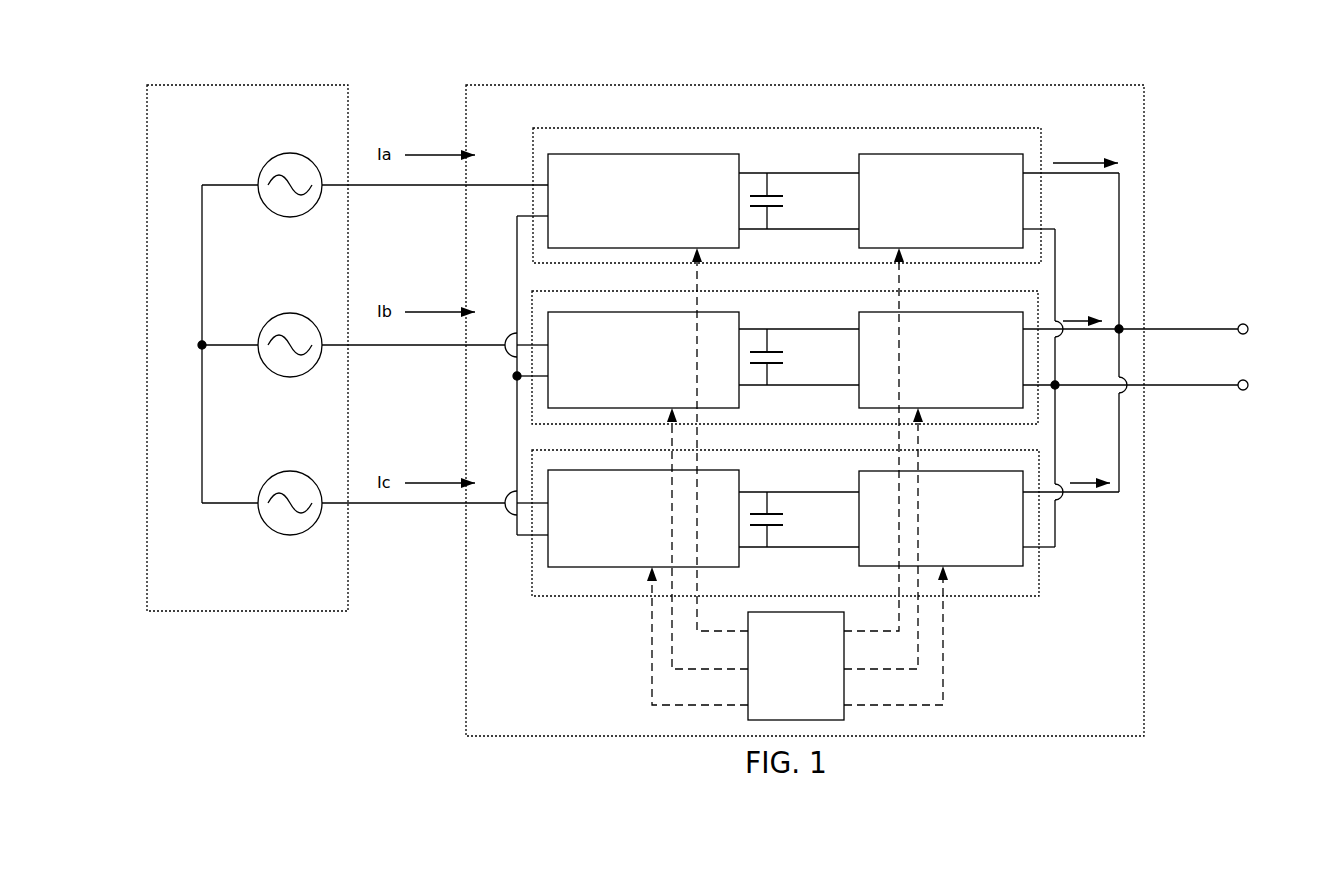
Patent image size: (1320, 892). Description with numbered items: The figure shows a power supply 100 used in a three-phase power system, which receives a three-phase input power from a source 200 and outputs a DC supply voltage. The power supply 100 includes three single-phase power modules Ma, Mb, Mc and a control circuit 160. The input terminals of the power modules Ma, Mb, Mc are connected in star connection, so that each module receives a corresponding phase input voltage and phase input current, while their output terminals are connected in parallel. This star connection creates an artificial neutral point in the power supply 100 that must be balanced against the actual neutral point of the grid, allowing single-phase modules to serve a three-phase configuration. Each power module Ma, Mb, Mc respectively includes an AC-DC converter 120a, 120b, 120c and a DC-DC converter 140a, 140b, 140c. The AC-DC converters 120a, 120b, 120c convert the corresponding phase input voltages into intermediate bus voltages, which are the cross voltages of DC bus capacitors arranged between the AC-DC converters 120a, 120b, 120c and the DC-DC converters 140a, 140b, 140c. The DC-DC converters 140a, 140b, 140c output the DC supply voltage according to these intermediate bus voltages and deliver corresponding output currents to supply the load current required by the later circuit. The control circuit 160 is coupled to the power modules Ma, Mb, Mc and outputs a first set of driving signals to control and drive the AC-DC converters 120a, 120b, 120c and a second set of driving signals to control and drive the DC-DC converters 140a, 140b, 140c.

The power supply 100 is at (712, 85).
The three-phase AC power source 200 is at (187, 611).
The AC-DC converter 120a is at (643, 201).
The AC-DC converter 120b is at (643, 360).
The AC-DC converter 120c is at (643, 518).
The DC-DC converter 140a is at (941, 201).
The DC-DC converter 140b is at (941, 360).
The DC-DC converter 140c is at (941, 518).
The control circuit 160 is at (796, 666).
The single-phase power module Ma is at (1007, 128).
The single-phase power module Mb is at (1007, 291).
The single-phase power module Mc is at (1010, 597).